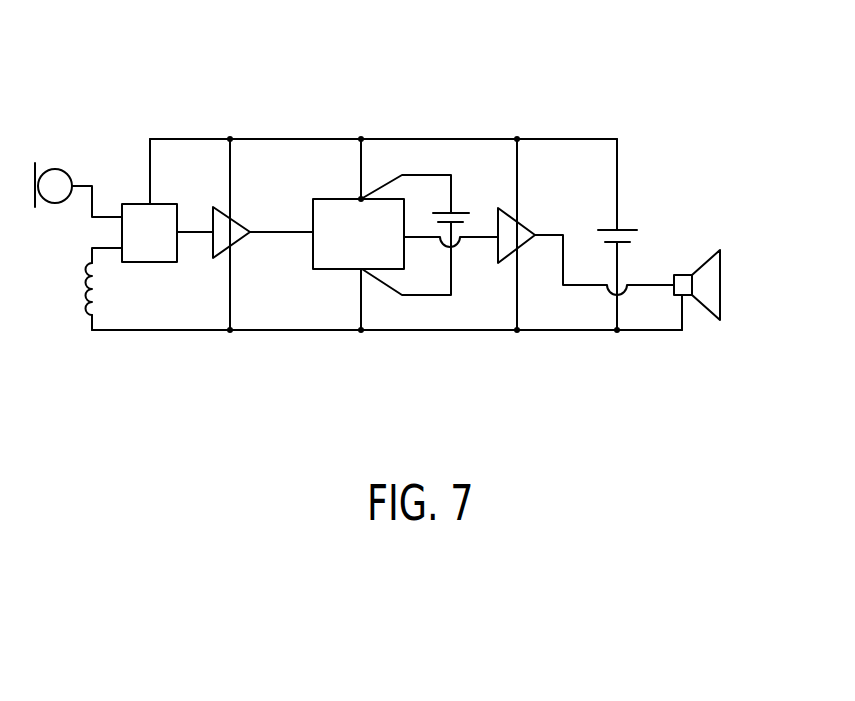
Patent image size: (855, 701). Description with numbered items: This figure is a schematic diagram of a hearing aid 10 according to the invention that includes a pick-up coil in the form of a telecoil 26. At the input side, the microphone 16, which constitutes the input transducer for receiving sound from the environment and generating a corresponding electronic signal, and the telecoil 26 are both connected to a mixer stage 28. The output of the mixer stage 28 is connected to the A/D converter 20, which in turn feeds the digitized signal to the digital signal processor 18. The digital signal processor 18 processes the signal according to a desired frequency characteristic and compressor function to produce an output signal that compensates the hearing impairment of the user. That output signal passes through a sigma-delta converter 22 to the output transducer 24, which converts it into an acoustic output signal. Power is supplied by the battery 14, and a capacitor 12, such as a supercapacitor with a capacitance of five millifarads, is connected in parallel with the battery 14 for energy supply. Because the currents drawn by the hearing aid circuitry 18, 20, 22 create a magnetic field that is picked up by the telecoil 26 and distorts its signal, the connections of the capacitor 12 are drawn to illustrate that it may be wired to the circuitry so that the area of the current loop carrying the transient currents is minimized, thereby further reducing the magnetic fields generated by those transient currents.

The hearing aid 10 is at (411, 84).
The capacitor 12 is at (458, 211).
The battery 14 is at (628, 226).
The microphone 16 is at (55, 164).
The digital signal processor 18 is at (234, 218).
The A/D converter 20 is at (320, 270).
The sigma-delta converter 22 is at (522, 221).
The output transducer 24 is at (722, 274).
The telecoil 26 is at (78, 289).
The mixer stage 28 is at (160, 263).